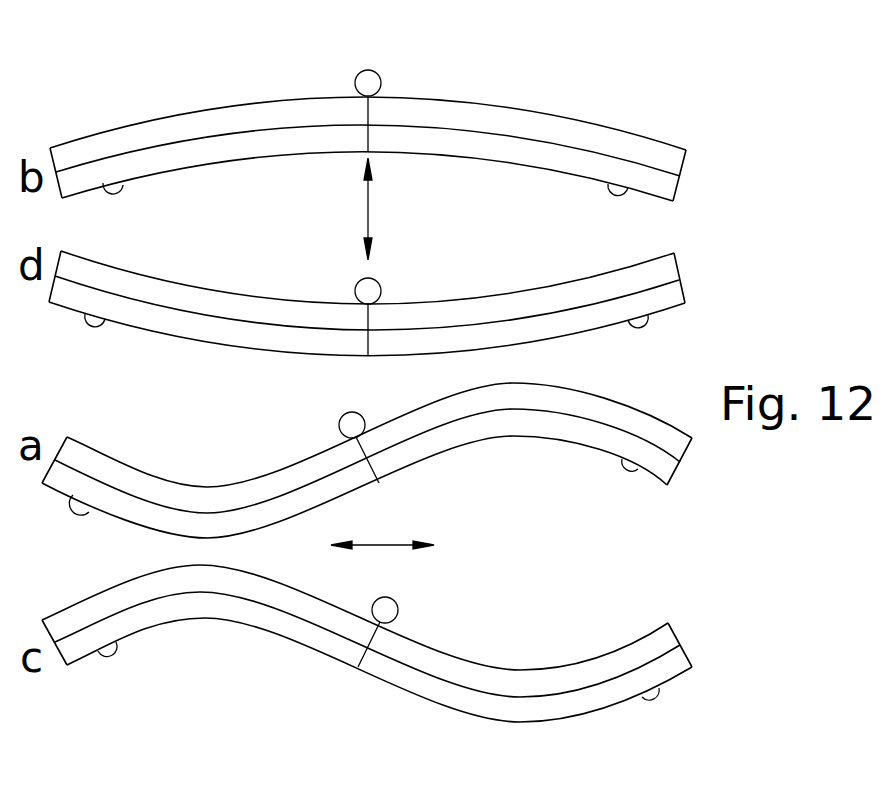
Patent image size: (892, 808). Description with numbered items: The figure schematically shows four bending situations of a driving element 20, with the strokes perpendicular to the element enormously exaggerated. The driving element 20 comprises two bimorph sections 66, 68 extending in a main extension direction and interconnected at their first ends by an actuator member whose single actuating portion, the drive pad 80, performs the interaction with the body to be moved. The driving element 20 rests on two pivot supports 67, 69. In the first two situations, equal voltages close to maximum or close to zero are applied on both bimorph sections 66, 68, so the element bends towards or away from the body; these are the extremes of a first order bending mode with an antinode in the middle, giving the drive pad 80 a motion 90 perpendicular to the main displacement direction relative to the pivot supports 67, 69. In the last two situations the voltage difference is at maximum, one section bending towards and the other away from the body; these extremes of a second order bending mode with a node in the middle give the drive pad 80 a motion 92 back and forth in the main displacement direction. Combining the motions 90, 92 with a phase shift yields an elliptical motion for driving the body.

The driving element 20 is at (676, 186).
The bimorph section 66 is at (555, 168).
The pivot support 67 is at (620, 197).
The bimorph section 68 is at (172, 160).
The pivot support 69 is at (118, 194).
The drive pad 80 is at (362, 78).
The motion perpendicular to the main displacement direction 90 is at (388, 209).
The motion in the main displacement direction 92 is at (382, 531).